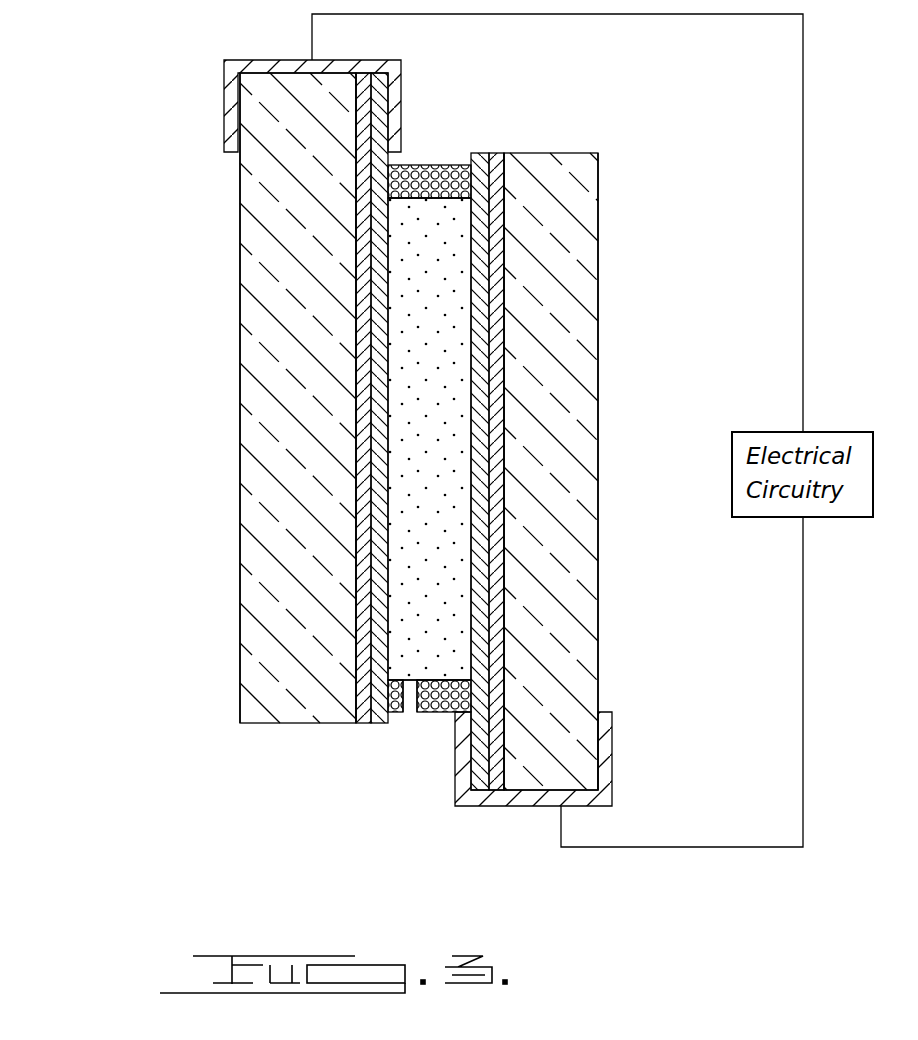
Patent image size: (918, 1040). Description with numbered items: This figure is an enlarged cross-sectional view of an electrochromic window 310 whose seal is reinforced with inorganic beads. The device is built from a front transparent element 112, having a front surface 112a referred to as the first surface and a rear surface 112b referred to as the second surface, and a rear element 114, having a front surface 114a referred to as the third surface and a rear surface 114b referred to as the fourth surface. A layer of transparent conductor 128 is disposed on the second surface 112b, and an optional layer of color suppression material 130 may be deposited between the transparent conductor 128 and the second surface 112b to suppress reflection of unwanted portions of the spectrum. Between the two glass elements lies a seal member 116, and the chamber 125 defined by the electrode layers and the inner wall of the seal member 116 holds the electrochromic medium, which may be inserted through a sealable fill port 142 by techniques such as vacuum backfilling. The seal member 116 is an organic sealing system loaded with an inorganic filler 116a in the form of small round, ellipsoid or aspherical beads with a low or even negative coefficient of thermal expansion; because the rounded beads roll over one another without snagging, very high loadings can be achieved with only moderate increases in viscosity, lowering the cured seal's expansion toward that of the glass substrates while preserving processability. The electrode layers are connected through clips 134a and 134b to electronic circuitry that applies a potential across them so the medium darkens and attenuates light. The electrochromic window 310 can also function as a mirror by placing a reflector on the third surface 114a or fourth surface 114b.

The electrochromic window 310 is at (134, 767).
The front transparent element 112 is at (580, 285).
The front surface of the front transparent element 112a is at (598, 380).
The rear surface of the front transparent element 112b is at (500, 218).
The rear element 114 is at (262, 520).
The front surface of the rear element 114a is at (362, 322).
The rear surface of the rear element 114b is at (242, 657).
The seal member 116 is at (436, 165).
The inorganic filler 116a is at (430, 198).
The chamber 125 is at (450, 501).
The transparent conductor 128 is at (482, 158).
The color suppression material 130 is at (497, 157).
The clip 134a is at (232, 140).
The clip 134b is at (612, 750).
The sealable fill port 142 is at (410, 712).